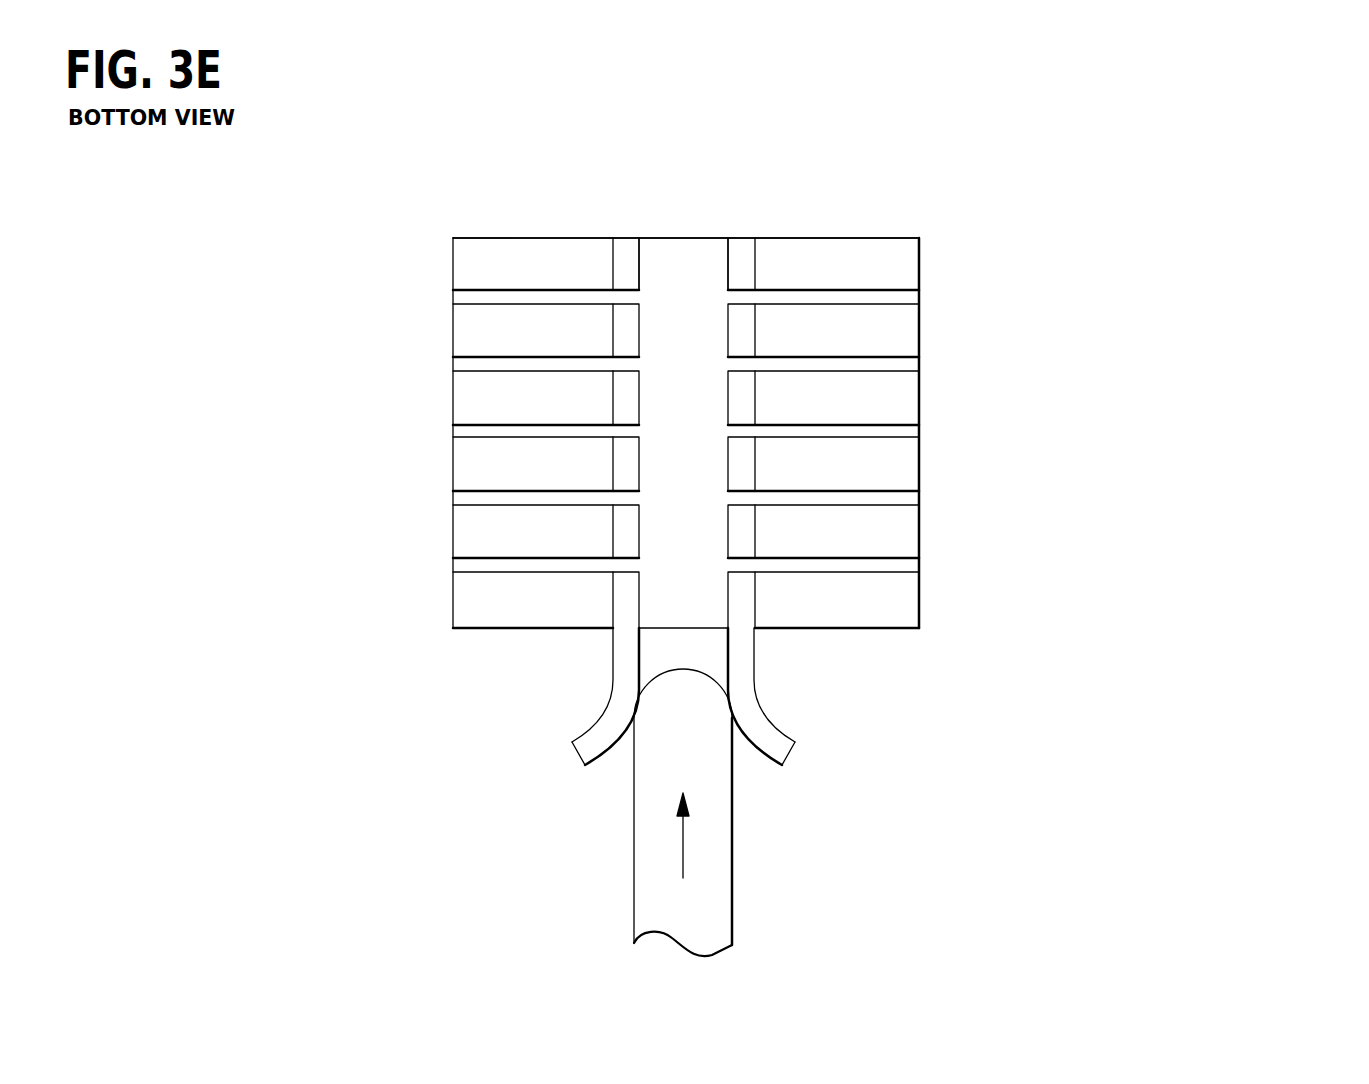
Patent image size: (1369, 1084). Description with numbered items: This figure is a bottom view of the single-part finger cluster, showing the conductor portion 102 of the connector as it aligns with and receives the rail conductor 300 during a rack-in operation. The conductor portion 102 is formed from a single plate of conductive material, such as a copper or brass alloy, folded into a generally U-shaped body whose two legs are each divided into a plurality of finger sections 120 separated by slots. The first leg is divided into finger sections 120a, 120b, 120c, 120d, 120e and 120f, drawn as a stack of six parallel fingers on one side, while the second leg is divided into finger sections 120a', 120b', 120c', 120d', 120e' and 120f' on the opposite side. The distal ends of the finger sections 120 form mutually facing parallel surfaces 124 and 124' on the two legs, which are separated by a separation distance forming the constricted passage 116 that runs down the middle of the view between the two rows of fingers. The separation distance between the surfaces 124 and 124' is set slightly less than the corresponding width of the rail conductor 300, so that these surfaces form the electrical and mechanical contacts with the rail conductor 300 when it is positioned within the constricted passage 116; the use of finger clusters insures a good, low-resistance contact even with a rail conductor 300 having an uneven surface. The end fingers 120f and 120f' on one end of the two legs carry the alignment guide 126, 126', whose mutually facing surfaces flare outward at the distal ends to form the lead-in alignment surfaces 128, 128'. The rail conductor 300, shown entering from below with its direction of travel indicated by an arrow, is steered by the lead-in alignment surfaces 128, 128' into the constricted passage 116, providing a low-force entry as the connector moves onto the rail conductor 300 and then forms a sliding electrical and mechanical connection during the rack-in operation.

The conductor portion 102 is at (945, 178).
The constricted passage 116 is at (695, 563).
The finger sections 120 is at (1215, 428).
The finger section 120a is at (504, 264).
The finger section 120b is at (504, 330).
The finger section 120c is at (504, 398).
The finger section 120d is at (504, 464).
The finger section 120e is at (504, 531).
The finger section 120f is at (505, 600).
The finger section 120a' is at (869, 264).
The finger section 120b' is at (869, 330).
The finger section 120c' is at (869, 398).
The finger section 120d' is at (869, 464).
The finger section 120e' is at (869, 531).
The finger section 120f' is at (871, 600).
The mutually facing parallel surface 124 is at (722, 223).
The mutually facing parallel surface 124' is at (646, 223).
The alignment guide 126 is at (513, 696).
The alignment guide 126' is at (818, 696).
The lead-in alignment surface 128 is at (845, 830).
The lead-in alignment surface 128' is at (796, 787).
The rail conductor 300 is at (625, 922).